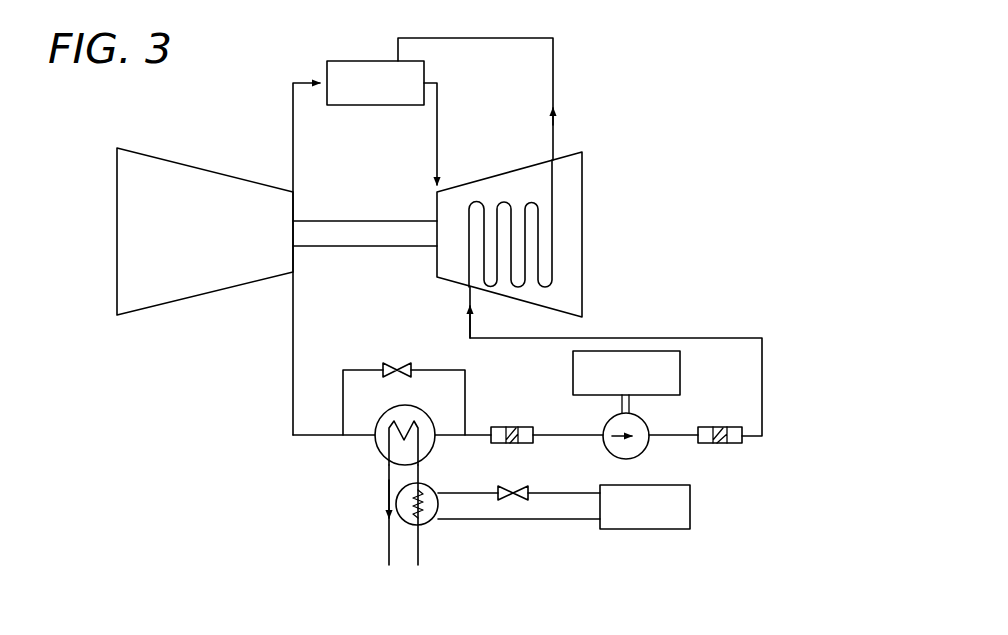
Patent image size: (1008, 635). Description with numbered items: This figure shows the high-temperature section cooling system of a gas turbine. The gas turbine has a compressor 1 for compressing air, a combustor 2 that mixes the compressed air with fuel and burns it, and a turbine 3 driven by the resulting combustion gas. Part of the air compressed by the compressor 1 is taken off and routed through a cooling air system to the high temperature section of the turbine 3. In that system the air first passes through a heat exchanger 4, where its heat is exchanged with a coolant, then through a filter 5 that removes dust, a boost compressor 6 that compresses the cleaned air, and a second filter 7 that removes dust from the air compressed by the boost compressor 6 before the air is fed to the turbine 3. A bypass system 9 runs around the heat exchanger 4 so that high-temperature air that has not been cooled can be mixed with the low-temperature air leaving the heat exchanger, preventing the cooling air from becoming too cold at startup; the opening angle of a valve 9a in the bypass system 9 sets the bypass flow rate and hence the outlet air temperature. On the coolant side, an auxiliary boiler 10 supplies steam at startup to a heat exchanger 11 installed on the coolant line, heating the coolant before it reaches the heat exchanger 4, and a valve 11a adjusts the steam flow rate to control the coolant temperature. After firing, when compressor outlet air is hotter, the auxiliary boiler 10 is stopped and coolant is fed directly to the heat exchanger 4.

The compressor 1 is at (209, 247).
The combustor 2 is at (383, 95).
The turbine 3 is at (562, 310).
The heat exchanger 4 is at (381, 412).
The filter 5 is at (504, 426).
The boost compressor 6 is at (604, 427).
The filter 7 is at (717, 426).
The bypass system 9 is at (356, 368).
The valve 9a is at (402, 362).
The auxiliary boiler 10 is at (632, 518).
The heat exchanger 11 is at (431, 522).
The valve 11a is at (530, 488).